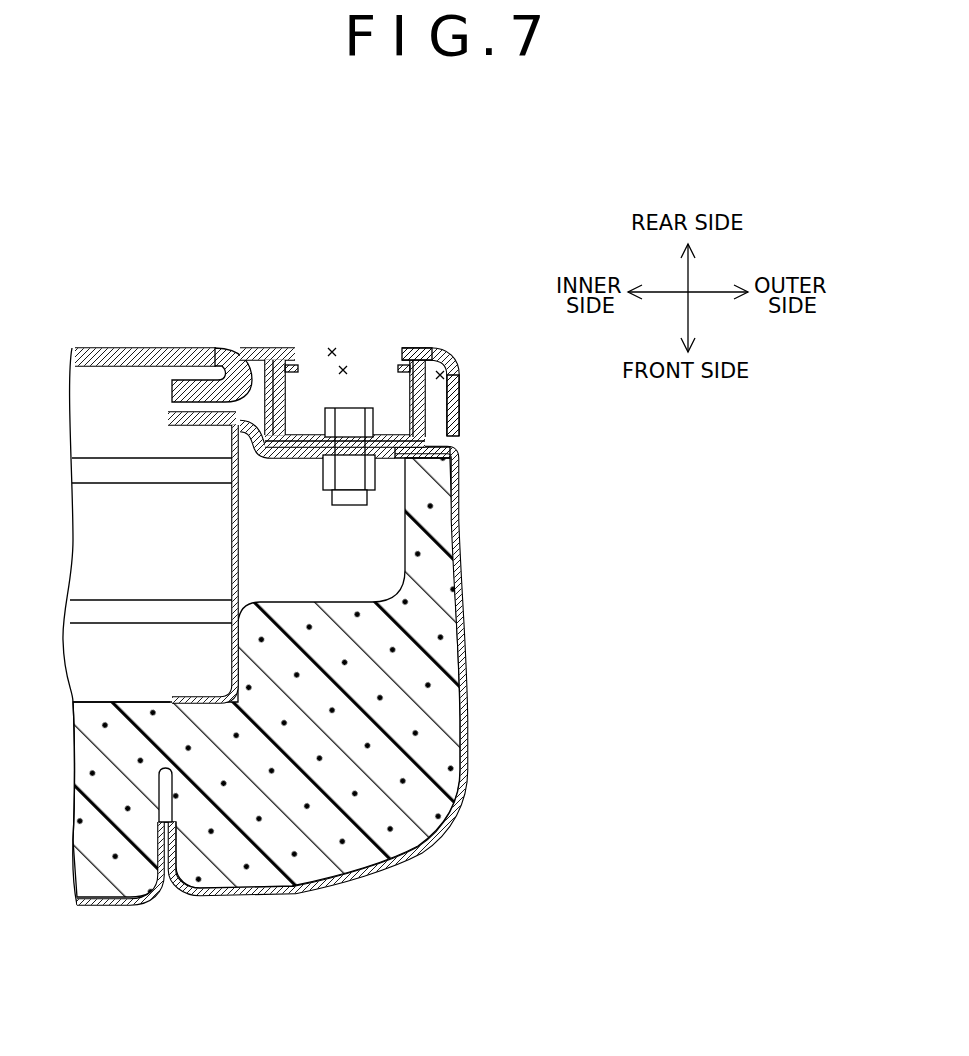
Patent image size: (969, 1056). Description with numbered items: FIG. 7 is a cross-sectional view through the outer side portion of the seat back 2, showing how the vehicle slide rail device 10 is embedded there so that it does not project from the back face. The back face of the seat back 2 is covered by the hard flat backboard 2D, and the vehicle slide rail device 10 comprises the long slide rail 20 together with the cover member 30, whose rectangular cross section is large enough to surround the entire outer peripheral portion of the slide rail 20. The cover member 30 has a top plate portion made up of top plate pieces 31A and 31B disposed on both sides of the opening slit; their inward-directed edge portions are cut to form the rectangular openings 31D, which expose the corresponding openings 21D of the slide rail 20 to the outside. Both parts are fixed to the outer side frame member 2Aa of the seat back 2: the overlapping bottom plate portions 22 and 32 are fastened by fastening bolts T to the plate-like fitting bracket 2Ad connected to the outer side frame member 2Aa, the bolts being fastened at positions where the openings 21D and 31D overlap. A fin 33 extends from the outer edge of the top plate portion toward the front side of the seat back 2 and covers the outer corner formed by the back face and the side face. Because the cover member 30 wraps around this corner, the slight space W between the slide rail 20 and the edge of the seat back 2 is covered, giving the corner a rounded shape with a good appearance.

The seat back 2 is at (343, 853).
The backboard 2D is at (122, 356).
The slide rail 20 is at (267, 350).
The outer side frame member 2Aa is at (233, 538).
The fitting bracket 2Ad is at (287, 460).
The vehicle slide rail device 10 is at (246, 325).
The openings 21D is at (345, 368).
The bottom plate portion 22 is at (426, 402).
The cover member 30 is at (436, 348).
The top plate piece 31A is at (277, 352).
The top plate piece 31B is at (415, 346).
The rectangular openings 31D is at (332, 350).
The bottom plate portion 32 is at (455, 458).
The fin 33 is at (462, 432).
The fastening bolts T is at (340, 430).
The space W is at (442, 374).